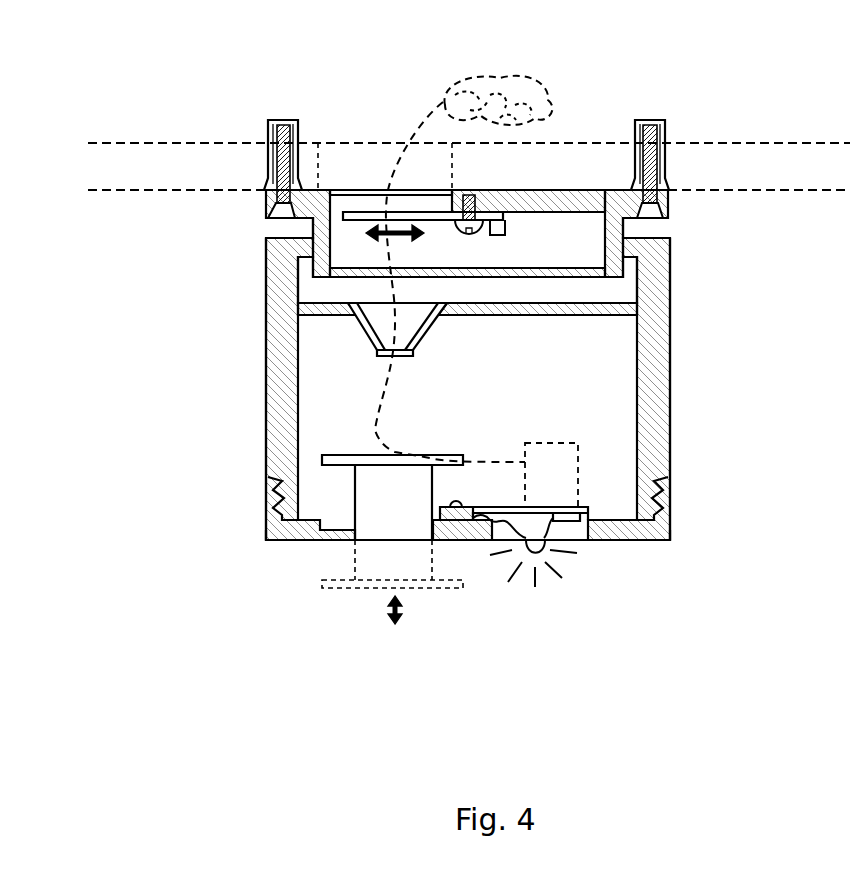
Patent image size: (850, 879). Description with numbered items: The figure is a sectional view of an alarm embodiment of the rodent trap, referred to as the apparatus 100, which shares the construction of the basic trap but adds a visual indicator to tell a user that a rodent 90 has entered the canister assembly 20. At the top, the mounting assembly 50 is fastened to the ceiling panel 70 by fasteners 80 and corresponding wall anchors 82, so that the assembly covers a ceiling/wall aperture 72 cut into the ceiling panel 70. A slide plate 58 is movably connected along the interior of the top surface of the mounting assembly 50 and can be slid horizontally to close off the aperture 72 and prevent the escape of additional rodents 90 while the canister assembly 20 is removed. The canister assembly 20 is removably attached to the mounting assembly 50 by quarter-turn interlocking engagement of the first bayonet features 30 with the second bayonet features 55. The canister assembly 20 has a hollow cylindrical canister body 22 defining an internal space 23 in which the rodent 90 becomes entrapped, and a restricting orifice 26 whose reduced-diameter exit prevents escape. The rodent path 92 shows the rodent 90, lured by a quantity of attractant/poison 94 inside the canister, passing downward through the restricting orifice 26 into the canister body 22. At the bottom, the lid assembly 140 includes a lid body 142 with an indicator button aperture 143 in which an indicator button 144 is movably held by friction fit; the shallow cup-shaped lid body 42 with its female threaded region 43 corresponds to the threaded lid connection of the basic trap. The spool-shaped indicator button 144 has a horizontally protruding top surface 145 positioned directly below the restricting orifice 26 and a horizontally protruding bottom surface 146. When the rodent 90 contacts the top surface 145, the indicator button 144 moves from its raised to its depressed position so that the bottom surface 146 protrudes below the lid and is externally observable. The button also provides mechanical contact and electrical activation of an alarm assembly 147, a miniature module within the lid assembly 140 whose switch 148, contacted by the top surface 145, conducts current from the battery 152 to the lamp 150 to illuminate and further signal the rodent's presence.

The canister assembly 20 is at (670, 388).
The canister body 22 is at (670, 338).
The internal space 23 is at (603, 453).
The restricting orifice 26 is at (365, 338).
The first bayonet features 30 is at (310, 248).
The lid body 42 is at (272, 510).
The female threaded region 43 is at (663, 500).
The mounting assembly 50 is at (265, 209).
The second bayonet features 55 is at (310, 268).
The slide plate 58 is at (378, 210).
The ceiling panel 70 is at (186, 140).
The ceiling/wall aperture 72 is at (360, 153).
The fasteners 80 is at (274, 125).
The wall anchors 82 is at (284, 130).
The rodent 90 is at (506, 82).
The rodent path 92 is at (373, 433).
The attractant/poison 94 is at (527, 438).
The apparatus 100 is at (223, 362).
The lid assembly 140 is at (632, 542).
The lid body 142 is at (265, 541).
The indicator button aperture 143 is at (353, 541).
The indicator button 144 is at (363, 533).
The top surface 145 is at (388, 455).
The bottom surface 146 is at (393, 542).
The alarm assembly 147 is at (500, 505).
The switch 148 is at (465, 518).
The lamp 150 is at (542, 557).
The battery 152 is at (577, 521).